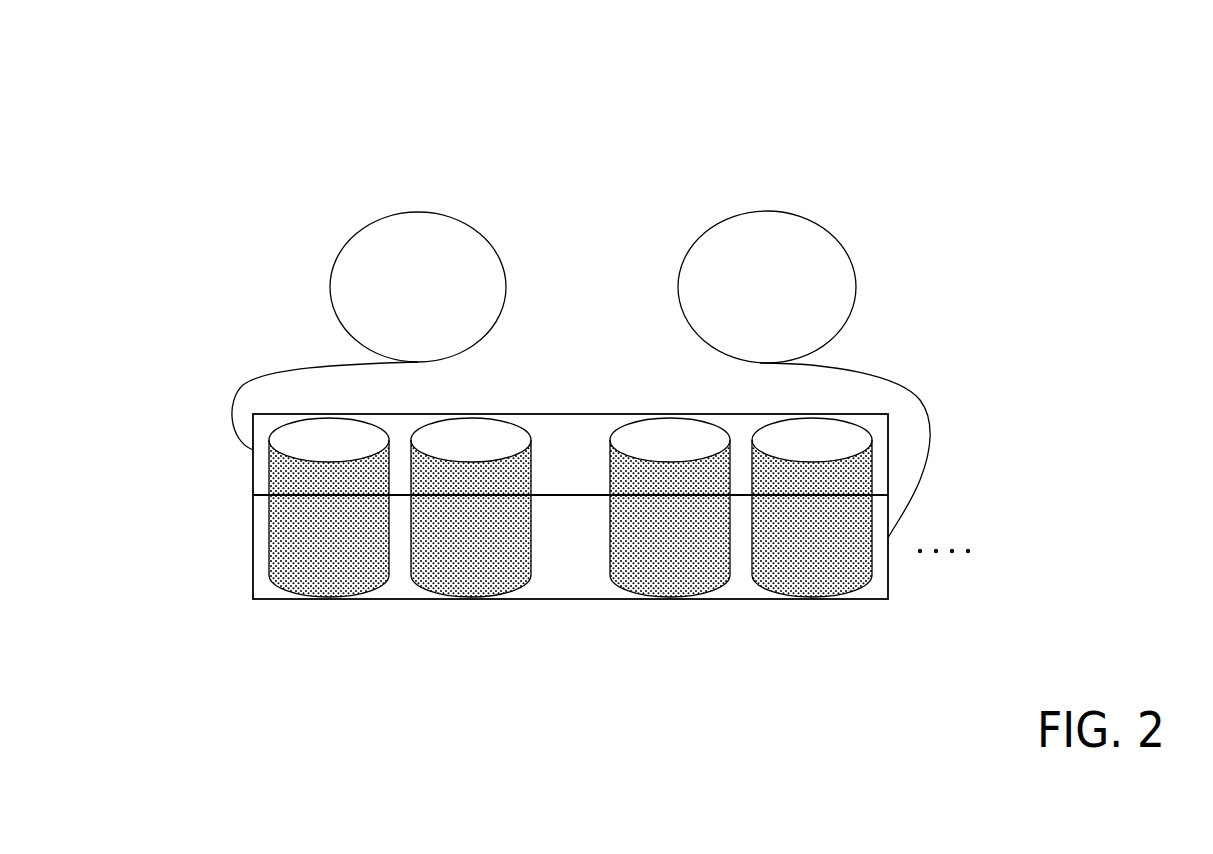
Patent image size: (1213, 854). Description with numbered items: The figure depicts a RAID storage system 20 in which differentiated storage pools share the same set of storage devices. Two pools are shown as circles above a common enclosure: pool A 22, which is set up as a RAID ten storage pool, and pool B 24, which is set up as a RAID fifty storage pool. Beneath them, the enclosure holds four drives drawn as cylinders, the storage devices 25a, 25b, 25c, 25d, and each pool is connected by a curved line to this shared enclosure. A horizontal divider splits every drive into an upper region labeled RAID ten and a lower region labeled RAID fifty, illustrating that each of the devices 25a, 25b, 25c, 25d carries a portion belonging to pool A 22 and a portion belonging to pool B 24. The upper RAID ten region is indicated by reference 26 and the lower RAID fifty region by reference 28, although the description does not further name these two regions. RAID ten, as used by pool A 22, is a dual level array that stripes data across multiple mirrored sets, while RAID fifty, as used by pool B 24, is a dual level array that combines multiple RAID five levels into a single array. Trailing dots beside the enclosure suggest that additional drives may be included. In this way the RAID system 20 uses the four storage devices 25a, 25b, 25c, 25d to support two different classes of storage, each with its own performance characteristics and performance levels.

The RAID storage system 20 is at (600, 401).
The pool A 22 is at (369, 304).
The pool B 24 is at (804, 329).
The storage device 25a is at (348, 589).
The storage device 25b is at (479, 594).
The storage device 25c is at (670, 594).
The storage device 25d is at (822, 584).
The RAID 10 group portion 26 is at (859, 455).
The RAID 50 group portion 28 is at (291, 587).